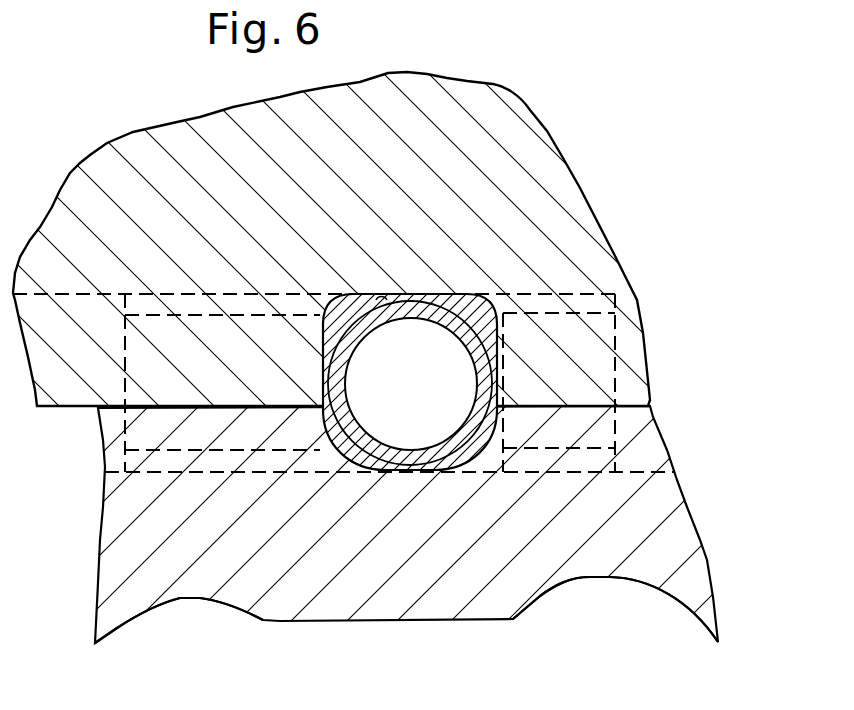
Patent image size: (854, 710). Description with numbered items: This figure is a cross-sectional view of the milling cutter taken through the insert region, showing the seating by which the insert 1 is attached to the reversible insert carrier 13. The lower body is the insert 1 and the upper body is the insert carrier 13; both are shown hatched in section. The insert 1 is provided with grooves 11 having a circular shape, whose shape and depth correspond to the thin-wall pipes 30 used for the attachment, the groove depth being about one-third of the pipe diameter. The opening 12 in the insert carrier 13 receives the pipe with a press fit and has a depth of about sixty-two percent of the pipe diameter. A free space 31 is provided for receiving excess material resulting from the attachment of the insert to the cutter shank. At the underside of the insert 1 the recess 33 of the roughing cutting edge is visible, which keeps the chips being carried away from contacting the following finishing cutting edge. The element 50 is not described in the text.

The insert 1 is at (120, 547).
The grooves 11 is at (640, 467).
The opening 12 is at (385, 300).
The insert carrier 13 is at (536, 152).
The thin-wall pipes 30 is at (133, 463).
The free space 31 is at (345, 305).
The recess 33 is at (175, 602).
The seal ring 50 is at (495, 318).